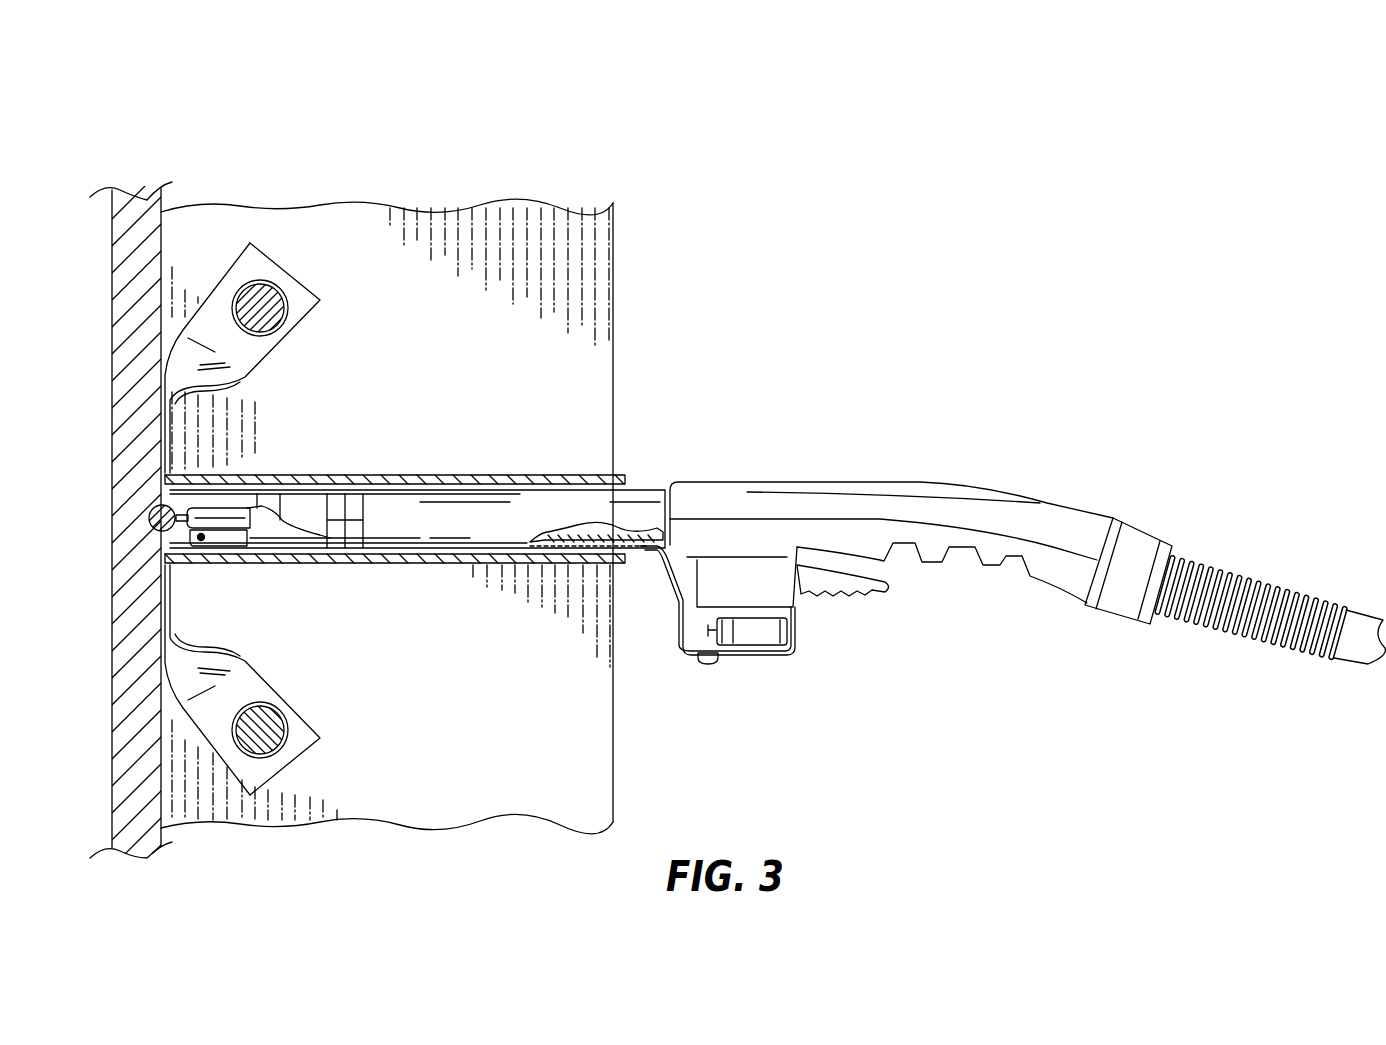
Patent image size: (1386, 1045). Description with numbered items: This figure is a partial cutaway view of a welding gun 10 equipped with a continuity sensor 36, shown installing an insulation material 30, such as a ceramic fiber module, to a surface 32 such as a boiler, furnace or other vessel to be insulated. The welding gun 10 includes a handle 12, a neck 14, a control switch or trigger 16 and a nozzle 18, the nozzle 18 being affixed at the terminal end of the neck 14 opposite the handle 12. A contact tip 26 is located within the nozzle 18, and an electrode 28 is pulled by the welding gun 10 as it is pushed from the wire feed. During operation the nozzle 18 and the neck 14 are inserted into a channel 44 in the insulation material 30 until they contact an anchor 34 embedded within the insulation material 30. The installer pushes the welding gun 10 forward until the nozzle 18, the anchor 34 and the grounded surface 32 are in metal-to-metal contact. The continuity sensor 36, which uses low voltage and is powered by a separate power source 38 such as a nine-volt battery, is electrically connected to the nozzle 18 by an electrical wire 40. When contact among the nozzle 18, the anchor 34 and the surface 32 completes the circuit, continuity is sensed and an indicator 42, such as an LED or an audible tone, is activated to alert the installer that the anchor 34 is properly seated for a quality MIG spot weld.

The welding gun 10 is at (1104, 410).
The handle 12 is at (975, 576).
The neck 14 is at (527, 508).
The control switch or trigger 16 is at (842, 593).
The nozzle 18 is at (303, 508).
The contact tip 26 is at (218, 515).
The electrode 28 is at (181, 528).
The insulation material 30 is at (480, 218).
The surface 32 is at (131, 215).
The anchor 34 is at (240, 268).
The continuity sensor 36 is at (201, 540).
The power source 38 is at (739, 633).
The electrical wire 40 is at (676, 592).
The indicator 42 is at (707, 665).
The channel 44 is at (625, 490).